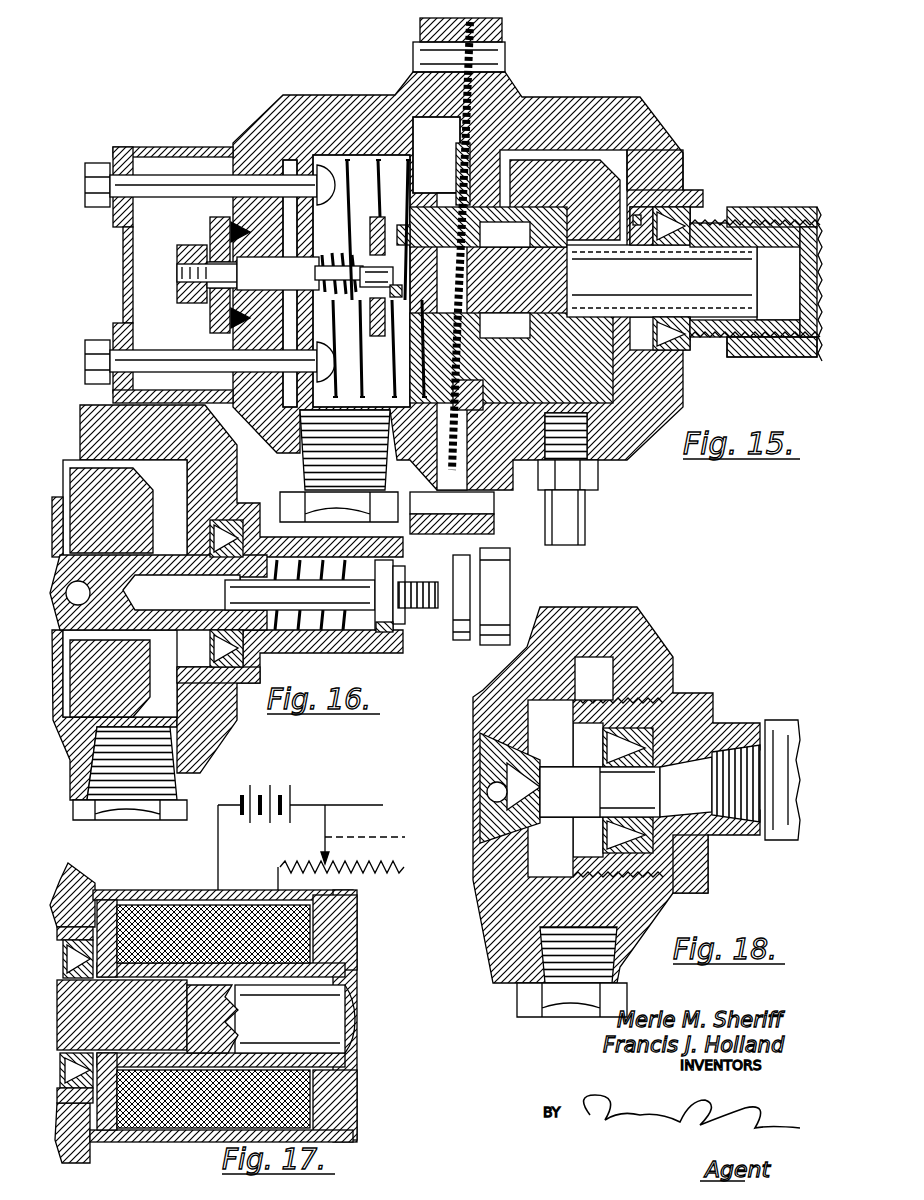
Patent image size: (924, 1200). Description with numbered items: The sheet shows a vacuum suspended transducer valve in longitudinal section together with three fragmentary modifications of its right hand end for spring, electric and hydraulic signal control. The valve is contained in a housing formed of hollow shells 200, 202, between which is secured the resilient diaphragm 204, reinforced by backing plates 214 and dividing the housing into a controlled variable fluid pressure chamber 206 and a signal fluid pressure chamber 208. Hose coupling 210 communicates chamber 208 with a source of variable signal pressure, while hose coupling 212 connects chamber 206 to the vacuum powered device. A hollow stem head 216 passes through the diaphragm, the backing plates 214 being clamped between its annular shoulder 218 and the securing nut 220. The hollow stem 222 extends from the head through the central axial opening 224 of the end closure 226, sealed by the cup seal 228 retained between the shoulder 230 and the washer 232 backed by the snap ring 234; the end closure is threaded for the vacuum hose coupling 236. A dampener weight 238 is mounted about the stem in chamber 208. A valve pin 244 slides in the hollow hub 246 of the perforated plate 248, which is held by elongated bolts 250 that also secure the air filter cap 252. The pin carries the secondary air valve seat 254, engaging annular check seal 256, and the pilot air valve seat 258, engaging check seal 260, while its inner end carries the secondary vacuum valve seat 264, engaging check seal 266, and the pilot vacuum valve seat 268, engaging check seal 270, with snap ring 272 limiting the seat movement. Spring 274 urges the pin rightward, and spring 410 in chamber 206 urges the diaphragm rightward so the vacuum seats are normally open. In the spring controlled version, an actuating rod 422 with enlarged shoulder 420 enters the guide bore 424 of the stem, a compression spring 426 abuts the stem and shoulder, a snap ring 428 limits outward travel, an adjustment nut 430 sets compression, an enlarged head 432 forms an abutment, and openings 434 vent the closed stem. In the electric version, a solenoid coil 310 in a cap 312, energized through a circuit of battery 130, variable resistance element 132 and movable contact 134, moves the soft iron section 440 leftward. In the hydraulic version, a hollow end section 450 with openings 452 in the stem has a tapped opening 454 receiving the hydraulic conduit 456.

In FIG. 17, the battery 130 is at (292, 802).
In FIG. 17, the variable resistance element 132 is at (350, 865).
In FIG. 17, the movable contact 134 is at (318, 862).
In FIG. 15, the hollow shell 200 is at (413, 85).
In FIG. 15, the hollow shell 202 is at (520, 98).
In FIG. 16, the hollow shell 202 is at (80, 440).
In FIG. 17, the hollow shell 202 is at (85, 880).
In FIG. 18, the hollow shell 202 is at (630, 608).
In FIG. 15, the resilient diaphragm 204 is at (436, 155).
In FIG. 15, the controlled variable fluid pressure chamber 206 is at (365, 160).
In FIG. 15, the signal fluid pressure chamber 208 is at (650, 150).
In FIG. 16, the signal fluid pressure chamber 208 is at (200, 740).
In FIG. 18, the signal fluid pressure chamber 208 is at (593, 657).
In FIG. 15, the hose coupling 210 is at (575, 505).
In FIG. 16, the hose coupling 210 is at (80, 806).
In FIG. 18, the hose coupling 210 is at (517, 1000).
In FIG. 15, the hose coupling 212 is at (290, 500).
In FIG. 15, the backing plates 214 is at (456, 150).
In FIG. 15, the hollow stem head 216 is at (497, 242).
In FIG. 15, the annular shoulder 218 is at (490, 318).
In FIG. 15, the securing nut 220 is at (446, 404).
In FIG. 15, the hollow stem 222 is at (757, 295).
In FIG. 17, the hollow stem 222 is at (75, 1015).
In FIG. 18, the hollow stem 222 is at (565, 775).
In FIG. 15, the central axial opening 224 is at (795, 357).
In FIG. 15, the end closure 226 is at (688, 340).
In FIG. 16, the end closure 226 is at (250, 685).
In FIG. 15, the cup seal 228 is at (672, 212).
In FIG. 16, the cup seal 228 is at (243, 655).
In FIG. 17, the cup seal 228 is at (60, 1085).
In FIG. 18, the cup seal 228 is at (600, 790).
In FIG. 15, the shoulder 230 is at (690, 215).
In FIG. 15, the washer 232 is at (645, 207).
In FIG. 15, the snap ring 234 is at (620, 157).
In FIG. 15, the hose coupling 236 is at (805, 207).
In FIG. 15, the dampener weight 238 is at (565, 150).
In FIG. 16, the dampener weight 238 is at (70, 485).
In FIG. 18, the dampener weight 238 is at (550, 788).
In FIG. 15, the valve pin 244 is at (248, 273).
In FIG. 15, the hollow hub 246 is at (240, 267).
In FIG. 15, the perforated plate 248 is at (320, 165).
In FIG. 15, the elongated bolts 250 is at (85, 180).
In FIG. 15, the air filter cap 252 is at (180, 147).
In FIG. 15, the secondary air valve seat 254 is at (231, 232).
In FIG. 15, the annular check seal 256 is at (251, 329).
In FIG. 15, the pilot air valve seat 258 is at (177, 262).
In FIG. 15, the annular check seal 260 is at (210, 300).
In FIG. 15, the secondary vacuum valve seat 264 is at (380, 278).
In FIG. 15, the annular check seal 266 is at (410, 245).
In FIG. 15, the pilot vacuum valve seat 268 is at (345, 280).
In FIG. 15, the annular check seal 270 is at (402, 292).
In FIG. 15, the snap ring 272 is at (393, 275).
In FIG. 15, the compression spring 274 is at (317, 273).
In FIG. 17, the solenoid coil 310 is at (255, 1065).
In FIG. 17, the cap 312 is at (340, 934).
In FIG. 15, the spring 410 is at (350, 150).
In FIG. 16, the enlarged shoulder 420 is at (395, 575).
In FIG. 16, the actuating rod 422 is at (430, 608).
In FIG. 16, the guide bore 424 is at (158, 592).
In FIG. 16, the compression spring 426 is at (300, 595).
In FIG. 16, the snap ring 428 is at (385, 632).
In FIG. 16, the adjustment nut 430 is at (460, 640).
In FIG. 16, the enlarged head 432 is at (500, 570).
In FIG. 16, the openings 434 is at (66, 593).
In FIG. 17, the soft iron section 440 is at (345, 1010).
In FIG. 18, the hollow end section 450 is at (703, 873).
In FIG. 18, the openings 452 is at (487, 792).
In FIG. 18, the tapped opening 454 is at (710, 783).
In FIG. 18, the hydraulic conduit 456 is at (795, 707).